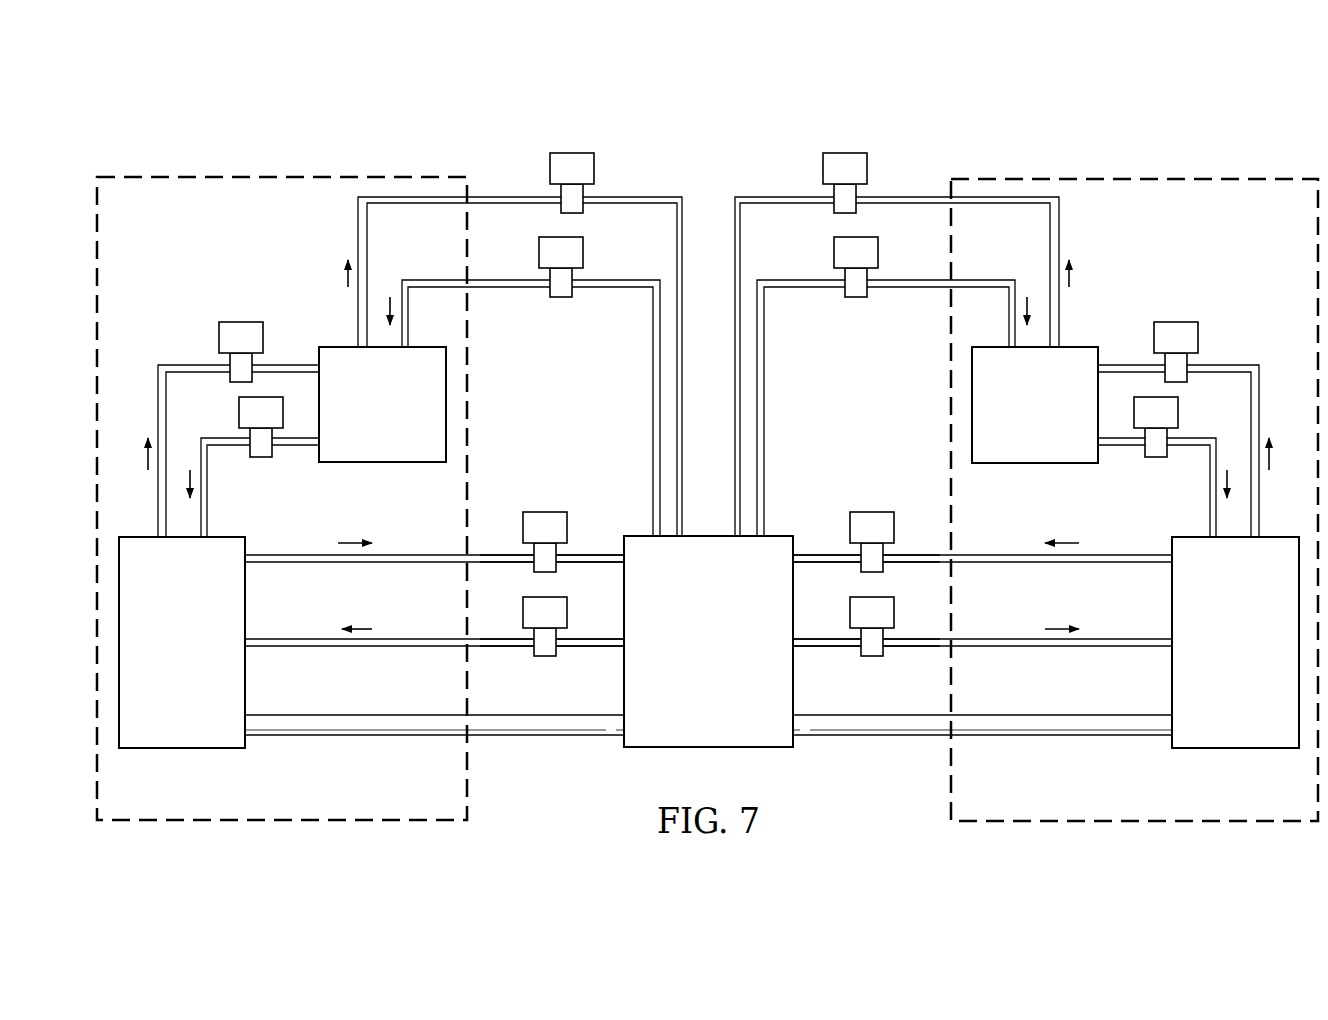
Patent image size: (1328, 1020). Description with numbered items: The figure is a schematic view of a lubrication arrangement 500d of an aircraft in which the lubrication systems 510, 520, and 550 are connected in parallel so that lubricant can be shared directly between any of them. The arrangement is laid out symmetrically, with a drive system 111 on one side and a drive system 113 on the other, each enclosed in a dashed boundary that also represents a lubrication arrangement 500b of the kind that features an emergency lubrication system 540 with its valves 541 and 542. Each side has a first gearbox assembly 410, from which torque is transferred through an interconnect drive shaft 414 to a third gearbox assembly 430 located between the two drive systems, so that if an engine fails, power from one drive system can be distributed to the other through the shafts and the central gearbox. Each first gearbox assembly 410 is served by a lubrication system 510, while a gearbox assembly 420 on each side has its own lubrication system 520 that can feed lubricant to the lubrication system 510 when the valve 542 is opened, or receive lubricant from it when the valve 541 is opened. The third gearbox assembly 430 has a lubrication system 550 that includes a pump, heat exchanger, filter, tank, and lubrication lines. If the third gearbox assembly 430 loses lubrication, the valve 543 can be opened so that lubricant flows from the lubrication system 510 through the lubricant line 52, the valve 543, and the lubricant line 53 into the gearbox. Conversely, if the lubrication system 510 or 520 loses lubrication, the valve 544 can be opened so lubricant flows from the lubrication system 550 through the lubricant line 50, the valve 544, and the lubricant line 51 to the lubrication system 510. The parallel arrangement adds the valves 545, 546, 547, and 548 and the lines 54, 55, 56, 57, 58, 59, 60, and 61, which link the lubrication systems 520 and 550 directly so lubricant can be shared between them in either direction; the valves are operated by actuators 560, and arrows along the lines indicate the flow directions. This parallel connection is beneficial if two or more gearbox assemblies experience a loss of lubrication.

The lubrication arrangement 500d is at (378, 75).
The lubrication arrangement 500b is at (180, 172).
The drive system 111 is at (255, 177).
The drive system 113 is at (1160, 177).
The first gearbox assembly 410 is at (182, 752).
The interconnect drive shaft 414 is at (355, 737).
The gearbox assembly 420 is at (380, 465).
The third gearbox assembly 430 is at (637, 534).
The lubrication system 510 is at (140, 537).
The lubrication system 520 is at (325, 347).
The emergency lubrication system 540 is at (233, 303).
The valve 541 is at (219, 338).
The valve 542 is at (261, 457).
The valve 543 is at (545, 512).
The valve 544 is at (543, 656).
The valve 545 is at (560, 297).
The valve 546 is at (550, 165).
The valve 547 is at (867, 165).
The valve 548 is at (858, 297).
The lubrication system 550 is at (792, 535).
The valve actuator 560 is at (553, 133).
The lubricant line 50 is at (598, 646).
The lubricant line 51 is at (352, 646).
The lubricant line 52 is at (312, 555).
The lubricant line 53 is at (597, 562).
The line 54 is at (632, 280).
The line 55 is at (432, 280).
The line 56 is at (357, 240).
The line 57 is at (648, 197).
The line 58 is at (797, 280).
The line 59 is at (1000, 280).
The line 60 is at (1061, 240).
The line 61 is at (780, 197).